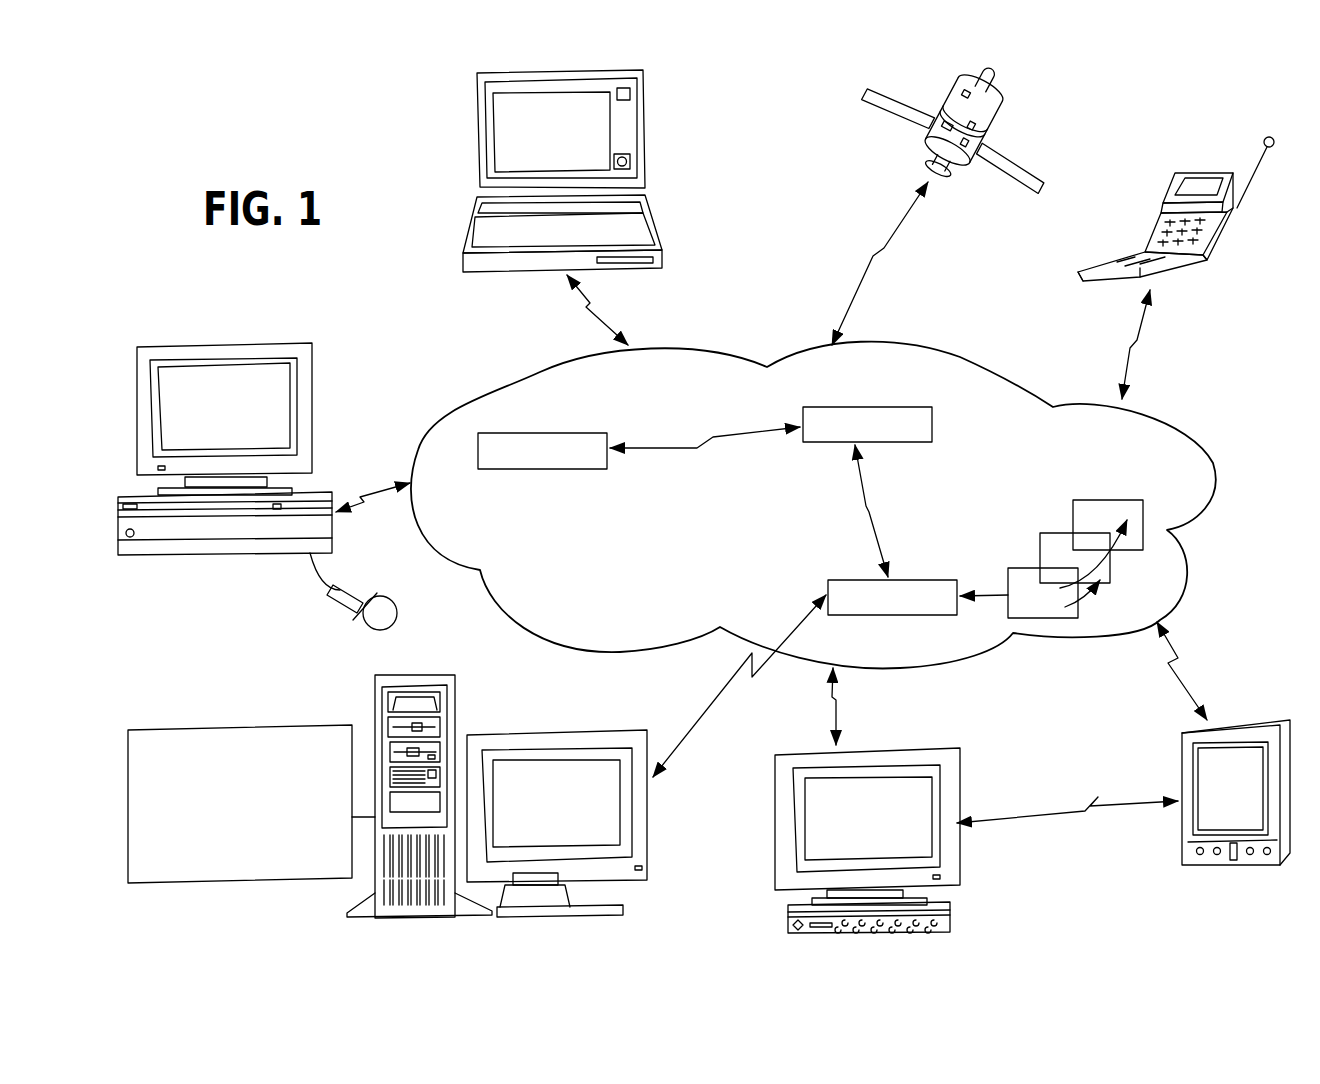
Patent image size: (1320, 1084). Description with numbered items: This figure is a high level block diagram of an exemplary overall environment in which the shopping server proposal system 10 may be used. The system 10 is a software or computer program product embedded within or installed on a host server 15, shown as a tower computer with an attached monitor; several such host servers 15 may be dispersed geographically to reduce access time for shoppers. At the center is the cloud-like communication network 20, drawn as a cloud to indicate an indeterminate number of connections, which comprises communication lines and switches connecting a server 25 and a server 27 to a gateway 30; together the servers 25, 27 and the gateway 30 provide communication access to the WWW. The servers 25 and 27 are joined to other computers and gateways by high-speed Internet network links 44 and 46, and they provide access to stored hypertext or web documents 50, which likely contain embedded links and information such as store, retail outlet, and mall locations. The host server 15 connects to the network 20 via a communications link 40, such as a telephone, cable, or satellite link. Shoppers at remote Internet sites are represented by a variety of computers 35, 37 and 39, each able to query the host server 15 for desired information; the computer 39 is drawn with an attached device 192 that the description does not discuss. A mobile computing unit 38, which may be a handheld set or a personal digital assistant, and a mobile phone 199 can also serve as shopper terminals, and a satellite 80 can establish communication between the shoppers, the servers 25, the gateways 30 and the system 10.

The shopping server proposal system 10 is at (228, 727).
The host server 15 is at (373, 713).
The communication network 20 is at (740, 344).
The server 25 is at (868, 578).
The server 27 is at (880, 405).
The gateway 30 is at (538, 472).
The computer 35 is at (645, 148).
The computer 37 is at (928, 747).
The mobile computing unit 38 is at (1182, 770).
The computer 39 is at (198, 343).
The communication link 40 is at (783, 637).
The high-speed Internet network link 44 is at (882, 545).
The high-speed Internet network link 46 is at (692, 437).
The hypertext documents 50 is at (1070, 512).
The satellite 80 is at (950, 87).
The microphone 192 is at (390, 593).
The mobile phone 199 is at (1160, 227).